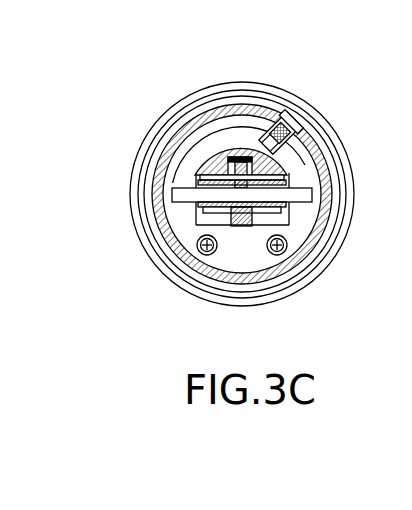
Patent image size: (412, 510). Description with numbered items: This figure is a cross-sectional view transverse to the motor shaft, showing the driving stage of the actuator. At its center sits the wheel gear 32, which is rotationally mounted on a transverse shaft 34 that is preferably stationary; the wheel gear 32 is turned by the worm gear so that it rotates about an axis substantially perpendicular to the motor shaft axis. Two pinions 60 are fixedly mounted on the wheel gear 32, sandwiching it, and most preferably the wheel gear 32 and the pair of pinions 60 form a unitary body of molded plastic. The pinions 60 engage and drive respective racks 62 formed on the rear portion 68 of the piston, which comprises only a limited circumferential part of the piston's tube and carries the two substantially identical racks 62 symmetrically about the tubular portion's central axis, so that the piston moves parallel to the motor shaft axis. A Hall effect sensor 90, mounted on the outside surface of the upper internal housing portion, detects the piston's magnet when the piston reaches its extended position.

The wheel gear 32 is at (248, 225).
The transverse shaft 34 is at (180, 181).
The pinions 60 is at (283, 222).
The racks 62 is at (265, 162).
The rear portion 68 is at (218, 140).
The Hall effect sensor 90 is at (276, 128).